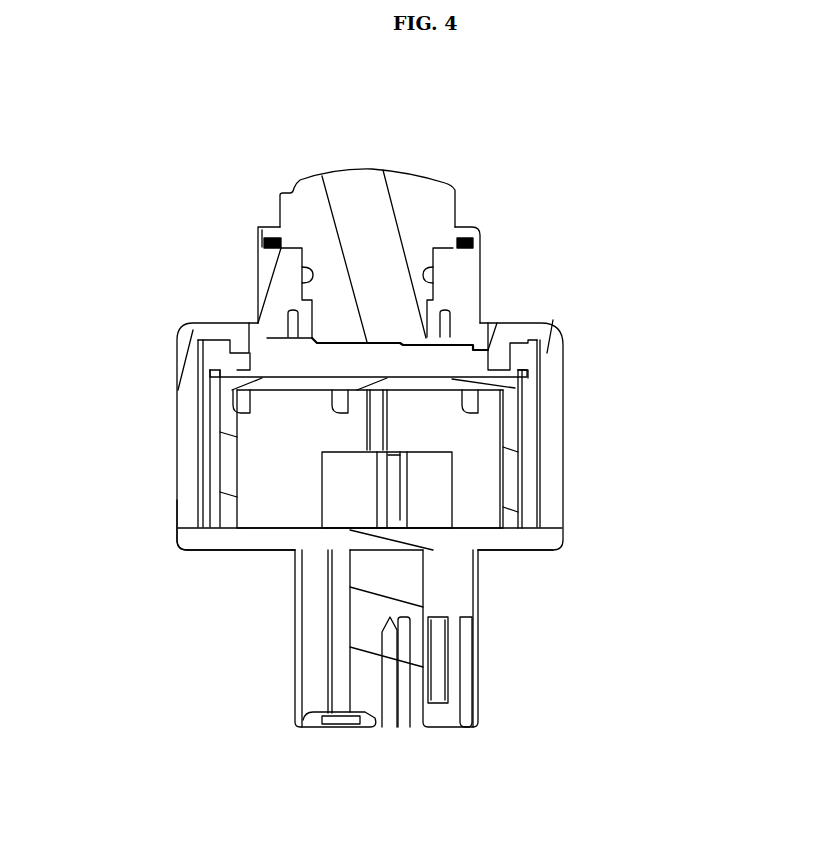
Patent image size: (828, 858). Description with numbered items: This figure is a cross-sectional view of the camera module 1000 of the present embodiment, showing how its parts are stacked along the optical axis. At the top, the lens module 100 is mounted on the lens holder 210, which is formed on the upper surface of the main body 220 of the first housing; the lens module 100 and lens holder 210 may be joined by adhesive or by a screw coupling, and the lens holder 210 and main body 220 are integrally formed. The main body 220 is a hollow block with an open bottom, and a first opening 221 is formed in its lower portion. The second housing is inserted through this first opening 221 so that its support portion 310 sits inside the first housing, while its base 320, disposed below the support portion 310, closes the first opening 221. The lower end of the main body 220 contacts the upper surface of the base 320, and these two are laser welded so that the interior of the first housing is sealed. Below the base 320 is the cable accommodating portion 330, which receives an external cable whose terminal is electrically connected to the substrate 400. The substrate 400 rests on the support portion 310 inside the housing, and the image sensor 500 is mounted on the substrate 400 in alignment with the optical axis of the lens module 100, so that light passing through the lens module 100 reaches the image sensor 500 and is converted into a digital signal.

The camera module 1000 is at (118, 127).
The lens module 100 is at (422, 212).
The lens holder 210 is at (465, 278).
The main body 220 is at (553, 360).
The first opening 221 is at (178, 540).
The support portion 310 is at (513, 437).
The base 320 is at (550, 530).
The cable accommodating portion 330 is at (458, 605).
The substrate 400 is at (227, 380).
The image sensor 500 is at (305, 350).